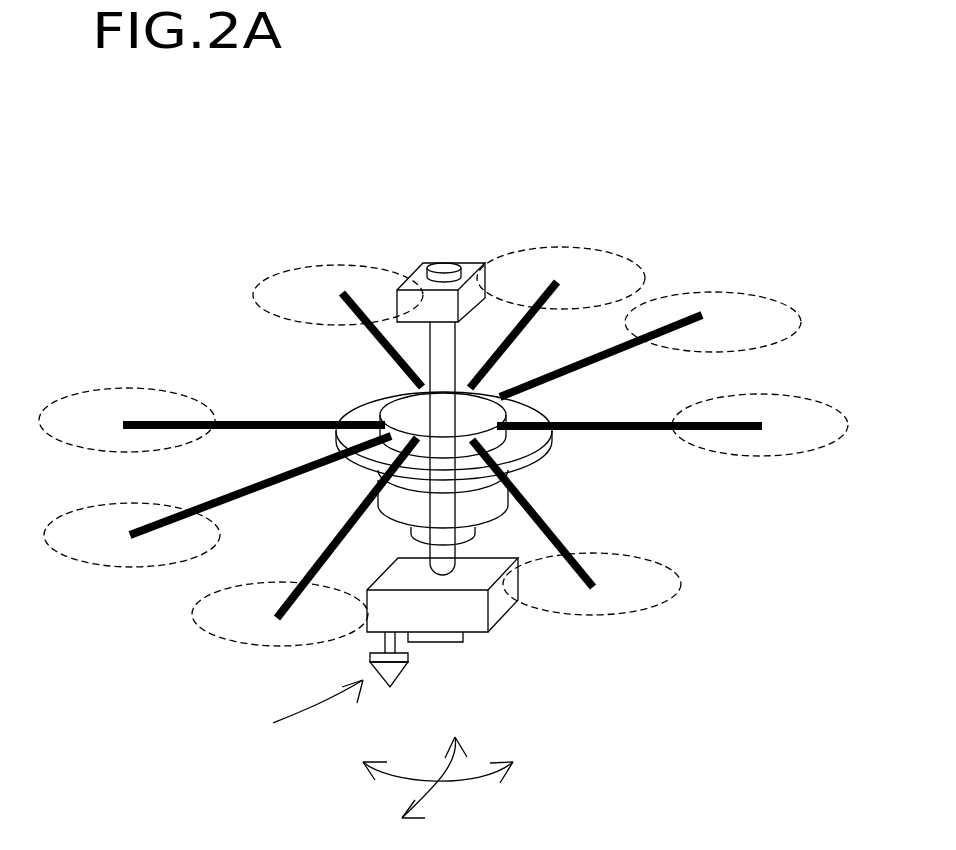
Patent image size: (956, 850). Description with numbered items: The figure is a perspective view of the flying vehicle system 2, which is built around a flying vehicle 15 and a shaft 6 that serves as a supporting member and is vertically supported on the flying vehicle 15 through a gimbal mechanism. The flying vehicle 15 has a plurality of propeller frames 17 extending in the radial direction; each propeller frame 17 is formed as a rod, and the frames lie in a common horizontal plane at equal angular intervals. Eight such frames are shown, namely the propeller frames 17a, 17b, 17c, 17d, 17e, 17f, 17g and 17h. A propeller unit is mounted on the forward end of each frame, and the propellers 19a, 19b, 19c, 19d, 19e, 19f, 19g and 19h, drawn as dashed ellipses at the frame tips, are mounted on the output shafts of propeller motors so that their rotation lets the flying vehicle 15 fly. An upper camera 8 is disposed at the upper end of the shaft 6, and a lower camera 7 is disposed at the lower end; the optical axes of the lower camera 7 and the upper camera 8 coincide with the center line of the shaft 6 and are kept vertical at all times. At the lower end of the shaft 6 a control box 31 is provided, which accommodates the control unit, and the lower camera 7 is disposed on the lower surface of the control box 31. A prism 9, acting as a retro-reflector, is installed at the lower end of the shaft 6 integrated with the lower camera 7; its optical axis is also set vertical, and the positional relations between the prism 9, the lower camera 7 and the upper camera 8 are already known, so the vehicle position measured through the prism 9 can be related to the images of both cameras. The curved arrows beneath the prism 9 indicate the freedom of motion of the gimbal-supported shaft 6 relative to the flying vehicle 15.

The flying vehicle system 2 is at (469, 84).
The shaft 6 is at (455, 355).
The lower camera 7 is at (447, 643).
The upper camera 8 is at (447, 263).
The prism 9 is at (395, 678).
The flying vehicle 15 is at (355, 398).
The propeller frame 17 is at (592, 425).
The propeller frame 17a is at (165, 420).
The propeller frame 17b is at (355, 303).
The propeller frame 17c is at (535, 308).
The propeller frame 17d is at (665, 328).
The propeller frame 17e is at (625, 432).
The propeller frame 17f is at (593, 575).
The propeller frame 17g is at (340, 530).
The propeller frame 17h is at (157, 530).
The propeller 19a is at (118, 390).
The propeller 19b is at (283, 273).
The propeller 19c is at (570, 247).
The propeller 19d is at (730, 292).
The propeller 19e is at (763, 457).
The propeller 19f is at (650, 608).
The propeller 19g is at (228, 640).
The propeller 19h is at (117, 568).
The control box 31 is at (502, 618).